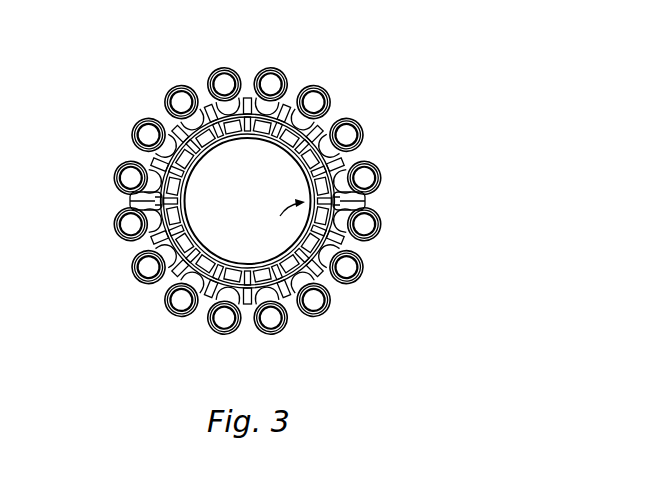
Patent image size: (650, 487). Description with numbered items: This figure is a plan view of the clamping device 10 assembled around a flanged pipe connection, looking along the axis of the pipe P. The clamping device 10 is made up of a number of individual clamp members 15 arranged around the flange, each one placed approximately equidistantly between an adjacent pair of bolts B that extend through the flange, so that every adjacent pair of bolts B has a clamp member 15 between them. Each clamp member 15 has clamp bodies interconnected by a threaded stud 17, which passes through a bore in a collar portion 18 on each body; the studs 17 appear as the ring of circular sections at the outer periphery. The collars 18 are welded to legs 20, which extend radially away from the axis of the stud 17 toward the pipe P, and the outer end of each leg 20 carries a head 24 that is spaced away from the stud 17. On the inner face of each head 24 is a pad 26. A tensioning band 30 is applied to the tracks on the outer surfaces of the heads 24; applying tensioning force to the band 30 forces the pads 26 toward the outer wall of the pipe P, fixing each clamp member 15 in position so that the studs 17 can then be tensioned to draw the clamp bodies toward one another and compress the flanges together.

The clamping device 10 is at (444, 193).
The clamp member 15 is at (333, 130).
The threaded stud 17 is at (275, 81).
The collar portion 18 is at (327, 312).
The leg 20 is at (260, 299).
The head 24 is at (173, 215).
The pad 26 is at (238, 270).
The tensioning band 30 is at (177, 268).
The bolt B is at (342, 165).
The pipe P is at (305, 205).